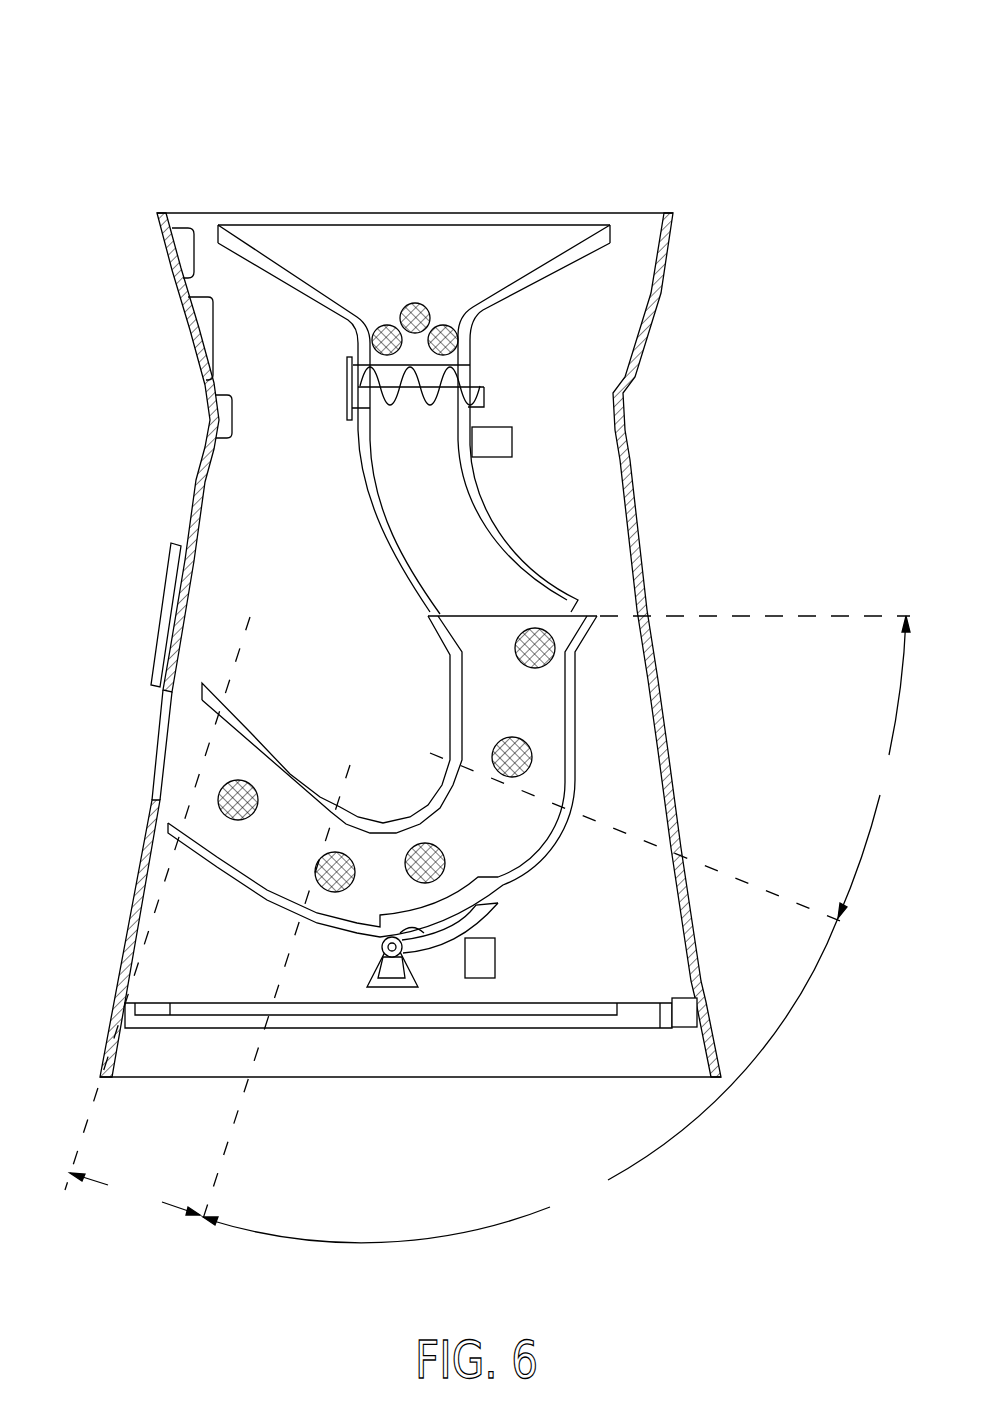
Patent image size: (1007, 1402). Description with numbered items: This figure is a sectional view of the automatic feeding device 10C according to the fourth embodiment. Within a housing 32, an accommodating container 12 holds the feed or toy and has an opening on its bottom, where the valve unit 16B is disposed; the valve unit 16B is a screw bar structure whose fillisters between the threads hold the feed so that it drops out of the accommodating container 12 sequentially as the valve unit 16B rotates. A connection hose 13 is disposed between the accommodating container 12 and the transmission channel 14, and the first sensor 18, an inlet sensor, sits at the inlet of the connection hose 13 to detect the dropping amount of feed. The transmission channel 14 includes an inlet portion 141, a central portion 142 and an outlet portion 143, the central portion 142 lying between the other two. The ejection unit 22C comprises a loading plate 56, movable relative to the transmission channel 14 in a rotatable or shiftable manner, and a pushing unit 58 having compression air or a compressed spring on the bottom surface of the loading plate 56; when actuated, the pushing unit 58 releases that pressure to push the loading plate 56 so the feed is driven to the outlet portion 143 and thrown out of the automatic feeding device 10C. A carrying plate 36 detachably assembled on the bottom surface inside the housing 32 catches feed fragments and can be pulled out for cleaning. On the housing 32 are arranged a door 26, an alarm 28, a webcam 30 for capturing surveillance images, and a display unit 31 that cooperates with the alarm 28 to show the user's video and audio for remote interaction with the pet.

The automatic feeding device 10C is at (502, 578).
The accommodating container 12 is at (560, 227).
The connection hose 13 is at (480, 560).
The transmission channel 14 is at (568, 720).
The valve unit 16B is at (473, 380).
The first sensor 18 is at (500, 442).
The ejection unit 22C is at (440, 985).
The door 26 is at (170, 566).
The alarm 28 is at (180, 255).
The webcam 30 is at (218, 410).
The display unit 31 is at (200, 336).
The housing 32 is at (668, 242).
The carrying plate 36 is at (585, 1005).
The loading plate 56 is at (493, 937).
The pushing unit 58 is at (480, 970).
The inlet portion 141 is at (670, 770).
The central portion 142 is at (520, 1080).
The outlet portion 143 is at (207, 922).